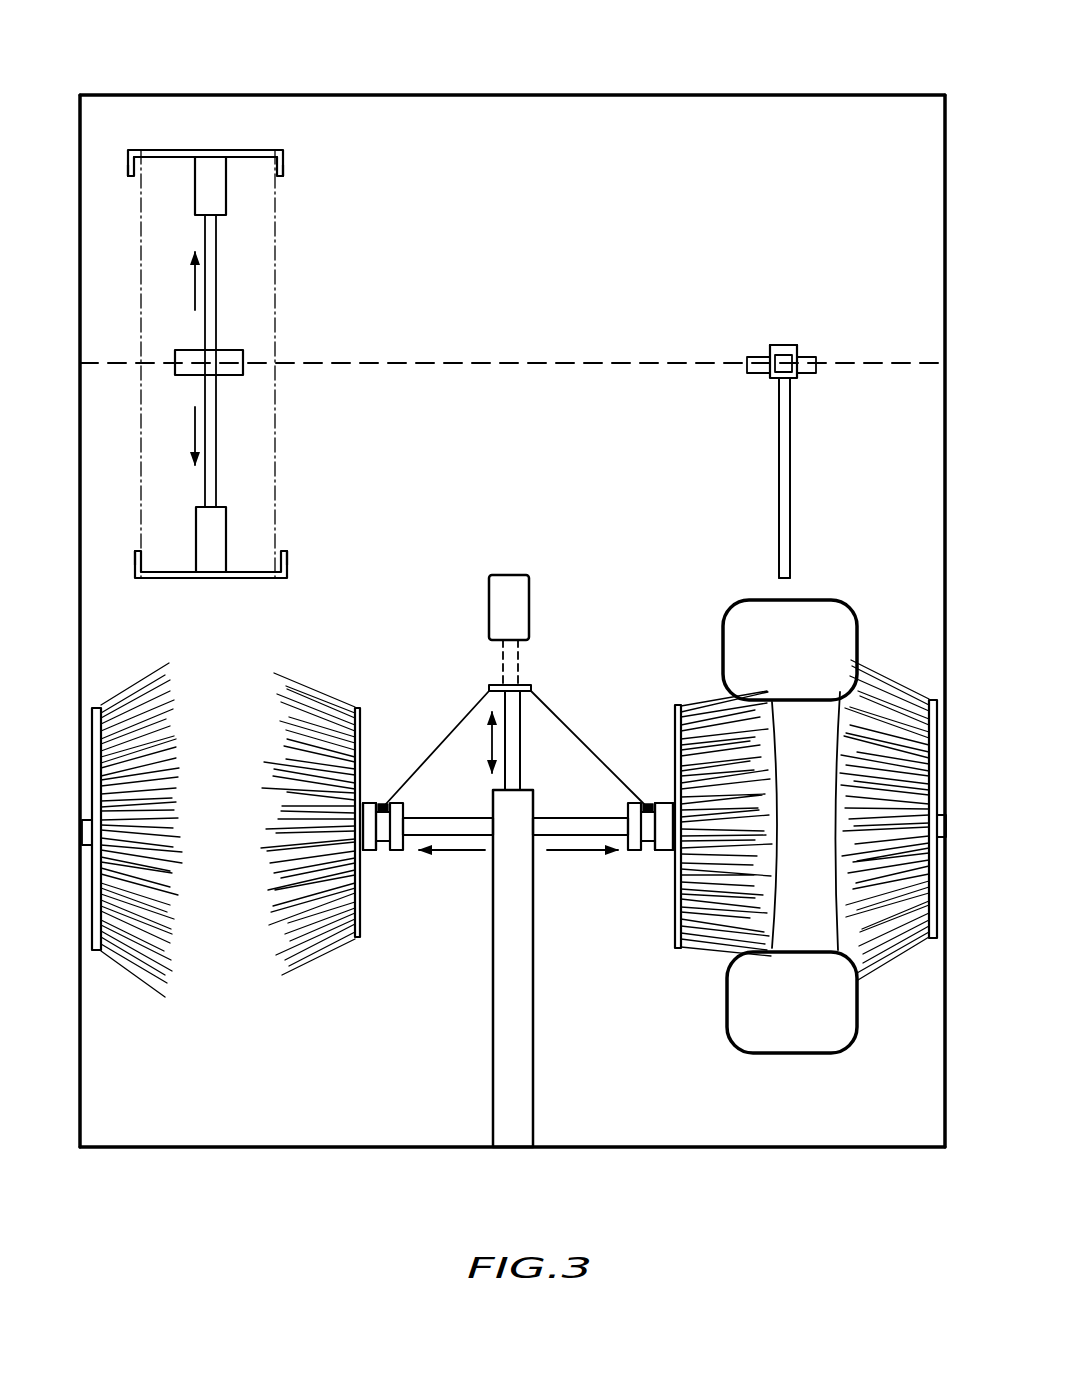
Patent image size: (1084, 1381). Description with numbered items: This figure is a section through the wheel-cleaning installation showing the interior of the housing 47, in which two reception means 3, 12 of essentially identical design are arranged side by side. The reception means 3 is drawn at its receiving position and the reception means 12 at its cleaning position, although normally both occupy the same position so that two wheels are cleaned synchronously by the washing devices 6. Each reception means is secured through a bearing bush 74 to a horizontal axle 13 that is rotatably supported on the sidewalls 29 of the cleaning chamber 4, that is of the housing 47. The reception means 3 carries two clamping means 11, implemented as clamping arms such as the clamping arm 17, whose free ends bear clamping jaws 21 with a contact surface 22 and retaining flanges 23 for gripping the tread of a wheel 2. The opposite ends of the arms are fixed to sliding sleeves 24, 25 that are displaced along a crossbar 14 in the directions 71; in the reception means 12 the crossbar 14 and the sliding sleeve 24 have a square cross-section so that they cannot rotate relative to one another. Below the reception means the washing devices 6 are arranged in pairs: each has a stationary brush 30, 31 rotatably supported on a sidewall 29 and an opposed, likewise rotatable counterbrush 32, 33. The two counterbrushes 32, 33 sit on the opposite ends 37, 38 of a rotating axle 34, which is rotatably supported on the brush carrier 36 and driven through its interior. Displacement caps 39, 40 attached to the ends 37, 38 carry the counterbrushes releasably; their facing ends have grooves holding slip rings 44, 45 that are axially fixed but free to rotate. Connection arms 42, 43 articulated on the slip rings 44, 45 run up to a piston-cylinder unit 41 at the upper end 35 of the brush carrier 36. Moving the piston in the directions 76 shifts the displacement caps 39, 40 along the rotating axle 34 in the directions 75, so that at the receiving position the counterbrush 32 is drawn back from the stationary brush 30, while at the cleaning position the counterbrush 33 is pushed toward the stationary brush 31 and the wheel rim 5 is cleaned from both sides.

The wheel 2 is at (283, 414).
The reception means 3 is at (198, 146).
The cleaning chamber 4 is at (632, 158).
The wheel rim 5 is at (795, 782).
The washing device 6 is at (227, 983).
The clamping means 11 is at (790, 447).
The reception means 12 is at (786, 336).
The horizontal axle 13 is at (472, 362).
The crossbar 14 is at (216, 280).
The clamping arm 17 is at (784, 478).
The clamping jaw 21 is at (243, 150).
The contact surface 22 is at (176, 163).
The retaining flange 23 is at (283, 164).
The sliding sleeve 24 is at (220, 190).
The sliding sleeve 25 is at (212, 528).
The sidewall 29 is at (80, 620).
The stationary brush 30 is at (128, 983).
The stationary brush 31 is at (893, 988).
The counterbrush 32 is at (315, 973).
The counterbrush 33 is at (692, 988).
The rotating axle 34 is at (552, 826).
The upper end of brush carrier 35 is at (528, 768).
The brush carrier 36 is at (512, 1002).
The end of rotating axle 37 is at (372, 858).
The end of rotating axle 38 is at (667, 858).
The displacement cap 39 is at (367, 822).
The displacement cap 40 is at (663, 810).
The piston-cylinder unit 41 is at (512, 563).
The connection arm 42 is at (422, 760).
The connection arm 43 is at (590, 750).
The slip ring 44 is at (385, 842).
The slip ring 45 is at (645, 842).
The housing 47 is at (473, 95).
The directions of displacement 71 is at (190, 286).
The bearing bush 74 is at (234, 357).
The directions of displacement 75 is at (450, 853).
The directions of piston movement 76 is at (470, 743).